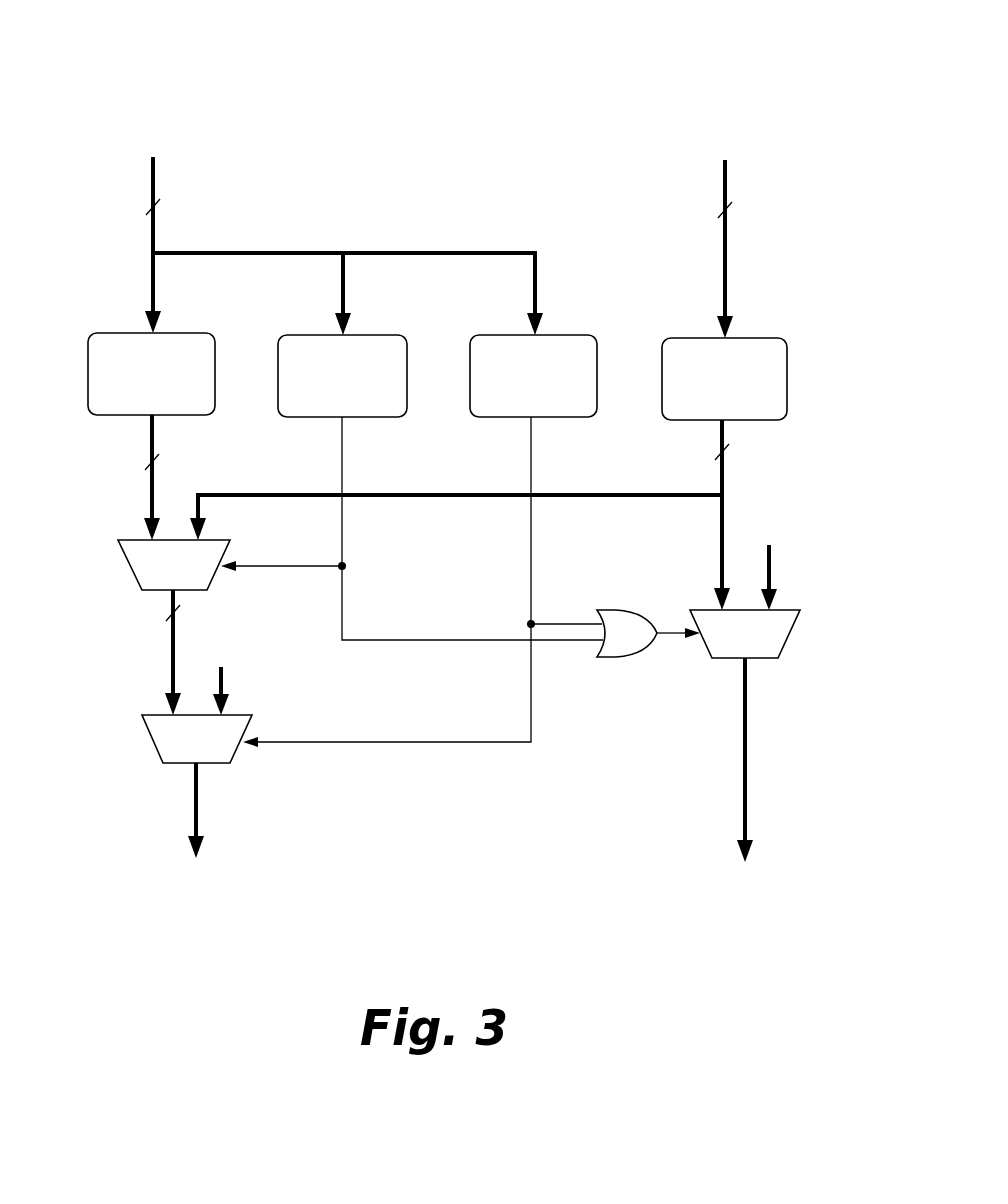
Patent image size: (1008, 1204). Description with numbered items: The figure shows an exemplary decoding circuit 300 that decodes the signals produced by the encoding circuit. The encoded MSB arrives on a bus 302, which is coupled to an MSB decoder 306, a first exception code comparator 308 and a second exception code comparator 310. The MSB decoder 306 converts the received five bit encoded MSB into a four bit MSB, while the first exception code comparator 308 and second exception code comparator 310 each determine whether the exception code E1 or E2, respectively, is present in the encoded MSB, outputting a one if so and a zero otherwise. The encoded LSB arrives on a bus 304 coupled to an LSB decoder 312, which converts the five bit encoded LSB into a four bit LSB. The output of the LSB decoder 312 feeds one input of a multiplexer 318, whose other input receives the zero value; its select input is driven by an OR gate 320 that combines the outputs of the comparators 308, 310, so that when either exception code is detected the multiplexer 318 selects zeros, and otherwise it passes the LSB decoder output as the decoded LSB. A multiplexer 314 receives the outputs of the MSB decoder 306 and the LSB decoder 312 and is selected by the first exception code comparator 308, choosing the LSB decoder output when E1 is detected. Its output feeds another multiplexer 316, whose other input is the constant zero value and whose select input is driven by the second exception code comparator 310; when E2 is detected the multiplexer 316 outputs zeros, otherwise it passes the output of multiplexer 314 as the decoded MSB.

The decoding circuit 300 is at (356, 38).
The bus 302 is at (435, 253).
The bus 304 is at (723, 272).
The MSB decoder 306 is at (120, 333).
The first exception code (E1) comparator 308 is at (310, 335).
The second exception code (E2) comparator 310 is at (500, 335).
The LSB decoder 312 is at (692, 338).
The multiplexer 314 is at (133, 540).
The multiplexer 316 is at (148, 715).
The multiplexer 318 is at (787, 610).
The OR gate 320 is at (627, 610).